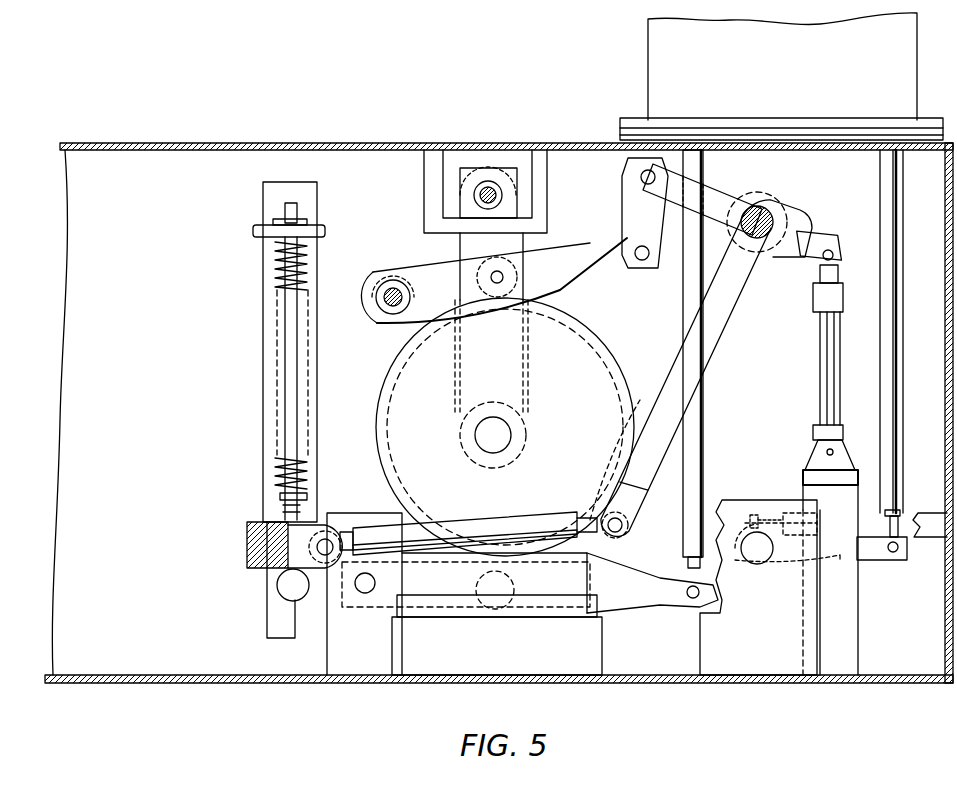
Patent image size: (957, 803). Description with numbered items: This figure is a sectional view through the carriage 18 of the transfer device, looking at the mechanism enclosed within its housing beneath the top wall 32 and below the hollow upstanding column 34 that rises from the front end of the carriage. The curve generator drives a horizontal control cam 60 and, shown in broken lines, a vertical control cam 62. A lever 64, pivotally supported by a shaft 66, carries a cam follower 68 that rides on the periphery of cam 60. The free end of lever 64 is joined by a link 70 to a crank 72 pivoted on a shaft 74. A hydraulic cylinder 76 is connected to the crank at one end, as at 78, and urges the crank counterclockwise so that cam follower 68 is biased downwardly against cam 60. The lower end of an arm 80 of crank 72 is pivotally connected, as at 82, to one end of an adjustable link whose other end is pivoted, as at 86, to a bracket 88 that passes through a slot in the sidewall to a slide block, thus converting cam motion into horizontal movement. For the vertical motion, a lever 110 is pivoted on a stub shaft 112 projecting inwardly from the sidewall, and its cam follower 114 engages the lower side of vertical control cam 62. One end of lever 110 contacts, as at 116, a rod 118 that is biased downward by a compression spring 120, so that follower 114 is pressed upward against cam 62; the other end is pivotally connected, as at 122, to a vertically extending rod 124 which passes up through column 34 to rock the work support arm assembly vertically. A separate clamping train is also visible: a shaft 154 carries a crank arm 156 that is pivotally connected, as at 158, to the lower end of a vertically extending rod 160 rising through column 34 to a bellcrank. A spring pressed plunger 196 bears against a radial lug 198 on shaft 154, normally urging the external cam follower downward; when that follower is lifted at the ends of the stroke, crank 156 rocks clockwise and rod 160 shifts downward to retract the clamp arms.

The carriage 18 is at (213, 145).
The top wall 32 is at (342, 142).
The hollow upstanding column 34 is at (665, 70).
The horizontal control cam 60 is at (606, 356).
The vertical control cam 62 is at (378, 400).
The lever 64 is at (423, 266).
The shaft 66 is at (378, 317).
The cam follower 68 is at (518, 278).
The link 70 is at (630, 210).
The crank 72 is at (712, 190).
The shaft 74 is at (766, 208).
The hydraulic cylinder 76 is at (824, 346).
The connection 78 is at (834, 246).
The arm 80 is at (718, 360).
The pivotal connection 82 is at (626, 530).
The pivotal connection 86 is at (326, 540).
The bracket 88 is at (246, 538).
The lever 110 is at (624, 604).
The stub shaft 112 is at (365, 595).
The cam follower 114 is at (495, 605).
The contact point 116 is at (290, 586).
The rod 118 is at (282, 514).
The compression spring 120 is at (278, 262).
The pivotal connection 122 is at (712, 607).
The vertically extending rod 124 is at (708, 422).
The shaft 154 is at (757, 556).
The crank arm 156 is at (870, 560).
The pivotal connection 158 is at (908, 562).
The vertically extending rod 160 is at (905, 378).
The spring pressed plunger 196 is at (765, 515).
The radial lug 198 is at (752, 518).